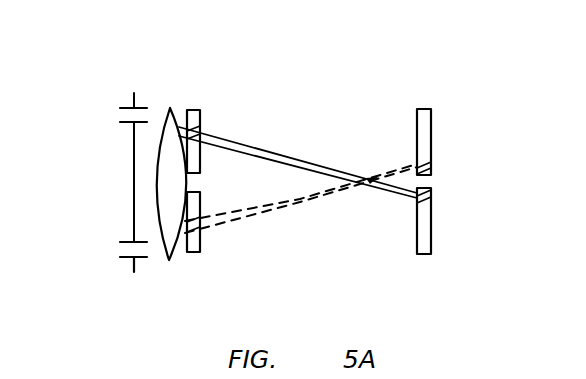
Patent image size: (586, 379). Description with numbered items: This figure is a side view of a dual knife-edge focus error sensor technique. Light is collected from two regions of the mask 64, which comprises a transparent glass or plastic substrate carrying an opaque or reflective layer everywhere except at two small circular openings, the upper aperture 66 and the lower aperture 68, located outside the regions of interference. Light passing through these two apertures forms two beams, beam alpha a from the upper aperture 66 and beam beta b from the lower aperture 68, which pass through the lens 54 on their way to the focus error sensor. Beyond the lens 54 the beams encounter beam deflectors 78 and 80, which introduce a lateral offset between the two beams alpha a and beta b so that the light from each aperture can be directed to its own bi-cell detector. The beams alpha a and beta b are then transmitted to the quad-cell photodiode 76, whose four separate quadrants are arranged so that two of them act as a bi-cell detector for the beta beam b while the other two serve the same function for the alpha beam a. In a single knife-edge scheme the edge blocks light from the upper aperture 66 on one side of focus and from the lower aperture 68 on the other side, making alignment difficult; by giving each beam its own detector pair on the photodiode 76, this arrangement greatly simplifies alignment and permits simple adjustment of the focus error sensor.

The lens 54 is at (168, 259).
The mask 64 is at (134, 90).
The upper aperture 66 is at (122, 113).
The lower aperture 68 is at (122, 247).
The quad-cell photodiode 76 is at (438, 148).
The beam deflector 78 is at (193, 98).
The beam deflector 80 is at (194, 264).
The beam alpha a is at (218, 146).
The beam beta b is at (208, 219).